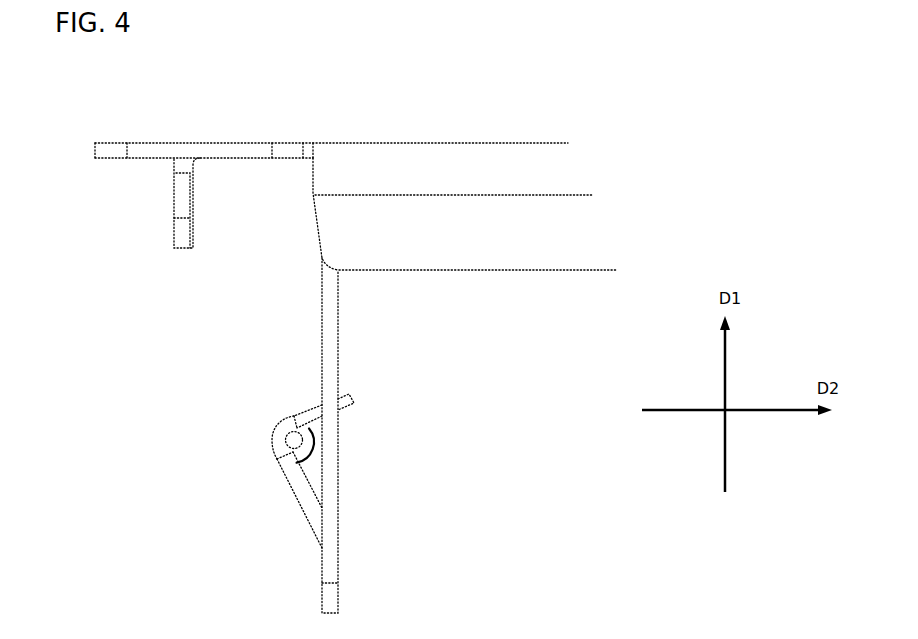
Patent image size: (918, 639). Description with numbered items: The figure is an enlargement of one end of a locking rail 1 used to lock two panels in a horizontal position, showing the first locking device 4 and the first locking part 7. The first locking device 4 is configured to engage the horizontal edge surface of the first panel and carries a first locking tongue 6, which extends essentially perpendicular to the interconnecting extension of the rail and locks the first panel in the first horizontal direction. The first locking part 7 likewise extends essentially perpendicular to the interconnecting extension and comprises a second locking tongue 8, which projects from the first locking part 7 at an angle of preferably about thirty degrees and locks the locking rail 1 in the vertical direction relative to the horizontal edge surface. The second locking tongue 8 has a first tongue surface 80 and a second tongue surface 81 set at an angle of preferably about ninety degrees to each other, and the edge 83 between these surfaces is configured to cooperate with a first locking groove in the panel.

The locking rail 1 is at (568, 132).
The first locking device 4 is at (272, 127).
The first locking tongue 6 is at (182, 205).
The first locking part 7 is at (332, 342).
The second locking tongue 8 is at (266, 488).
The first tongue surface 80 is at (298, 508).
The second tongue surface 81 is at (305, 403).
The edge 83 is at (274, 437).